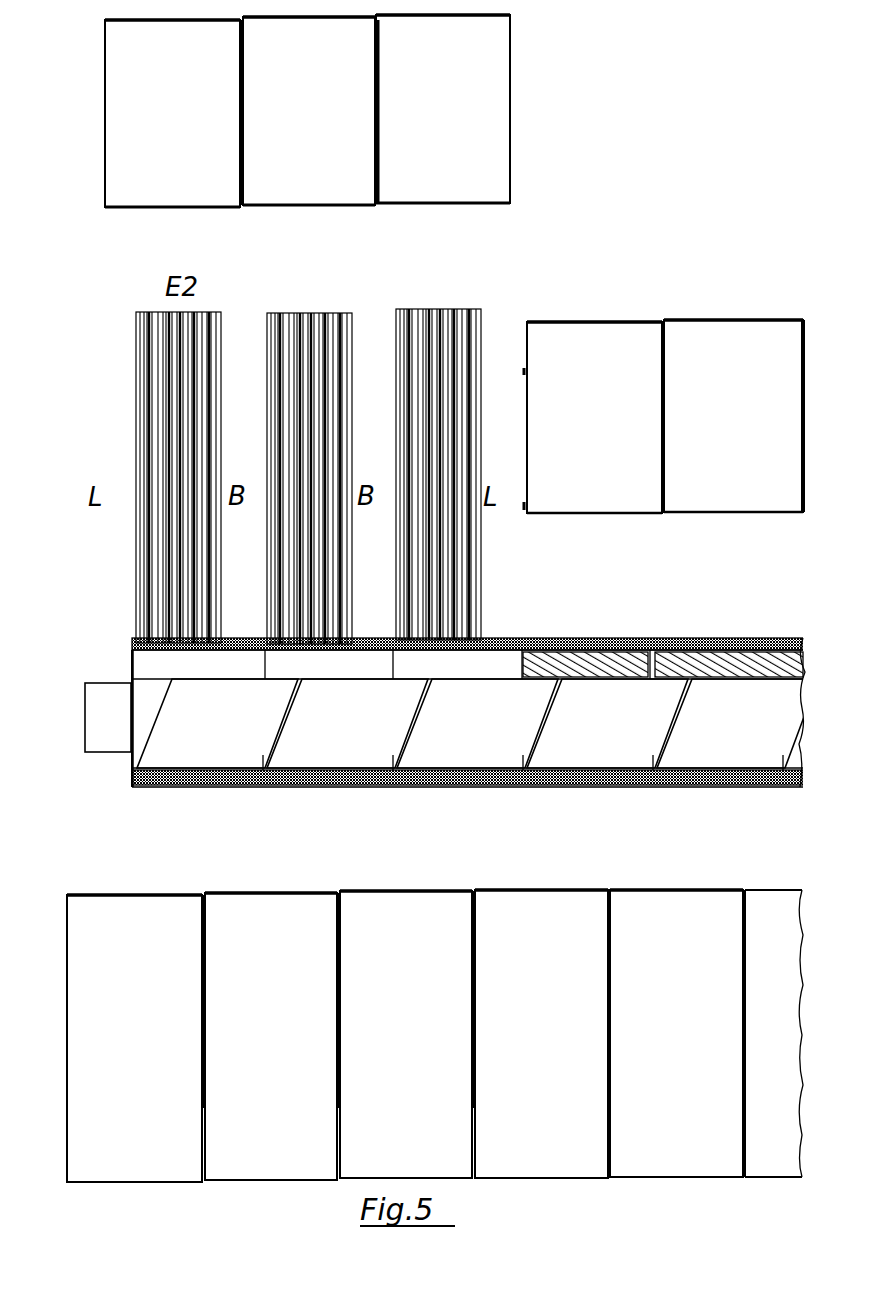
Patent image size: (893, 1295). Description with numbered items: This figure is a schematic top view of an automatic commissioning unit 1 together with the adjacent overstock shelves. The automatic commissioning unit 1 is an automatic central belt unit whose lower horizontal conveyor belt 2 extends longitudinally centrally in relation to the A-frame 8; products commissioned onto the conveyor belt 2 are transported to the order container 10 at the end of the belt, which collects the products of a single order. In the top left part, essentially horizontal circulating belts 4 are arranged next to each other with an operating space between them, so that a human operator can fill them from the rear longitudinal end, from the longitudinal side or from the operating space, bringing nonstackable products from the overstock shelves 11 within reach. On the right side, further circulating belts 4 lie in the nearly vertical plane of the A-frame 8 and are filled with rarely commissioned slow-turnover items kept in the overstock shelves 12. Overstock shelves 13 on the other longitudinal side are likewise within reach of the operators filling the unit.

The automatic commissioning unit 1 is at (432, 581).
The conveyor belt 2 is at (157, 727).
The circulating belts 4 is at (283, 318).
The A-frame 8 is at (628, 752).
The order container 10 is at (94, 745).
The overstock shelves 11 is at (500, 152).
The overstock shelves 12 is at (702, 328).
The overstock shelves 13 is at (398, 910).